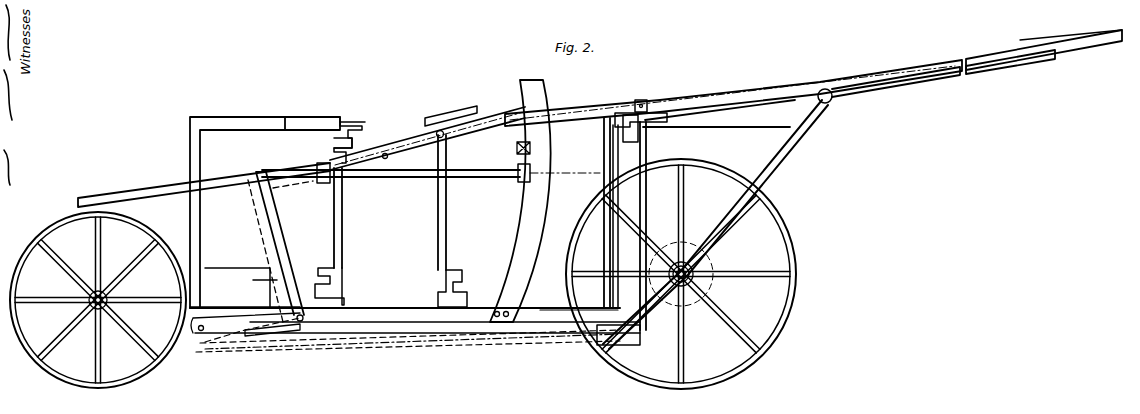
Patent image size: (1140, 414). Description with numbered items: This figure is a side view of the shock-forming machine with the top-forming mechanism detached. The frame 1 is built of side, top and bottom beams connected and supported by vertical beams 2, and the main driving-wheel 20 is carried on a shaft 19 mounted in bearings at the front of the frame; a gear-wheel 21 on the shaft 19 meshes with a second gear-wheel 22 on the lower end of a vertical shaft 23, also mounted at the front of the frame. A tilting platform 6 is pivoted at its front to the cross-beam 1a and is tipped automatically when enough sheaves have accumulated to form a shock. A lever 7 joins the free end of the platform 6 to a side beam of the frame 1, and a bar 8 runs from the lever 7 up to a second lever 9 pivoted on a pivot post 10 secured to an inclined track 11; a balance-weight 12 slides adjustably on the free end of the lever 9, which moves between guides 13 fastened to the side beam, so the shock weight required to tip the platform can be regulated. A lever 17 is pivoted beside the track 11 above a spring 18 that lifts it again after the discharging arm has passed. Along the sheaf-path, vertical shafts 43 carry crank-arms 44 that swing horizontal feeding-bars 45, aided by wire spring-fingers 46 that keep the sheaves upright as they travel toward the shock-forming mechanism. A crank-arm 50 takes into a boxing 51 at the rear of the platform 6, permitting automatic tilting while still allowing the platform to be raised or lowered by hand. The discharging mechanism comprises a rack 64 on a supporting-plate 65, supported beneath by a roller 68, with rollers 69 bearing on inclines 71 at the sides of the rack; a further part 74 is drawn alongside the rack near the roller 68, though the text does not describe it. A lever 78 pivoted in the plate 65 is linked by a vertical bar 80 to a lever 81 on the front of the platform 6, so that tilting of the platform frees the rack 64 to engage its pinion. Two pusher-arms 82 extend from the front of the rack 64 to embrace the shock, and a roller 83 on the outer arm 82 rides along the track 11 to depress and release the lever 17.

The frame 1 is at (252, 118).
The cross-beam 1a is at (606, 292).
The vertical beams 2 is at (200, 241).
The tilting platform 6 is at (407, 330).
The lever 7 is at (408, 341).
The bar 8 is at (283, 218).
The second lever 9 is at (420, 178).
The pivot post 10 is at (323, 178).
The inclined track 11 is at (204, 182).
The balance-weight 12 is at (520, 181).
The guides 13 is at (524, 247).
The lever 17 is at (491, 142).
The spring 18 is at (532, 149).
The shaft 19 is at (700, 280).
The main driving-wheel 20 is at (403, 274).
The gear-wheel 21 is at (705, 266).
The second gear-wheel 22 is at (655, 222).
The vertical shaft 23 is at (638, 216).
The vertical shafts 43 is at (334, 246).
The crank-arms 44 is at (396, 289).
The feeding-bars 45 is at (334, 144).
The wire spring-fingers 46 is at (435, 126).
The crank-arm 50 is at (275, 330).
The boxing 51 is at (250, 275).
The rack 64 is at (813, 78).
The supporting-plate 65 is at (633, 118).
The roller 68 is at (833, 97).
The rollers 69 is at (653, 93).
The inclines 71 is at (1093, 42).
The lower handle bar 74 is at (925, 78).
The lever 78 is at (640, 135).
The vertical bar 80 is at (602, 247).
The lever 81 is at (626, 338).
The pusher-arms 82 is at (470, 124).
The roller 83 is at (436, 134).